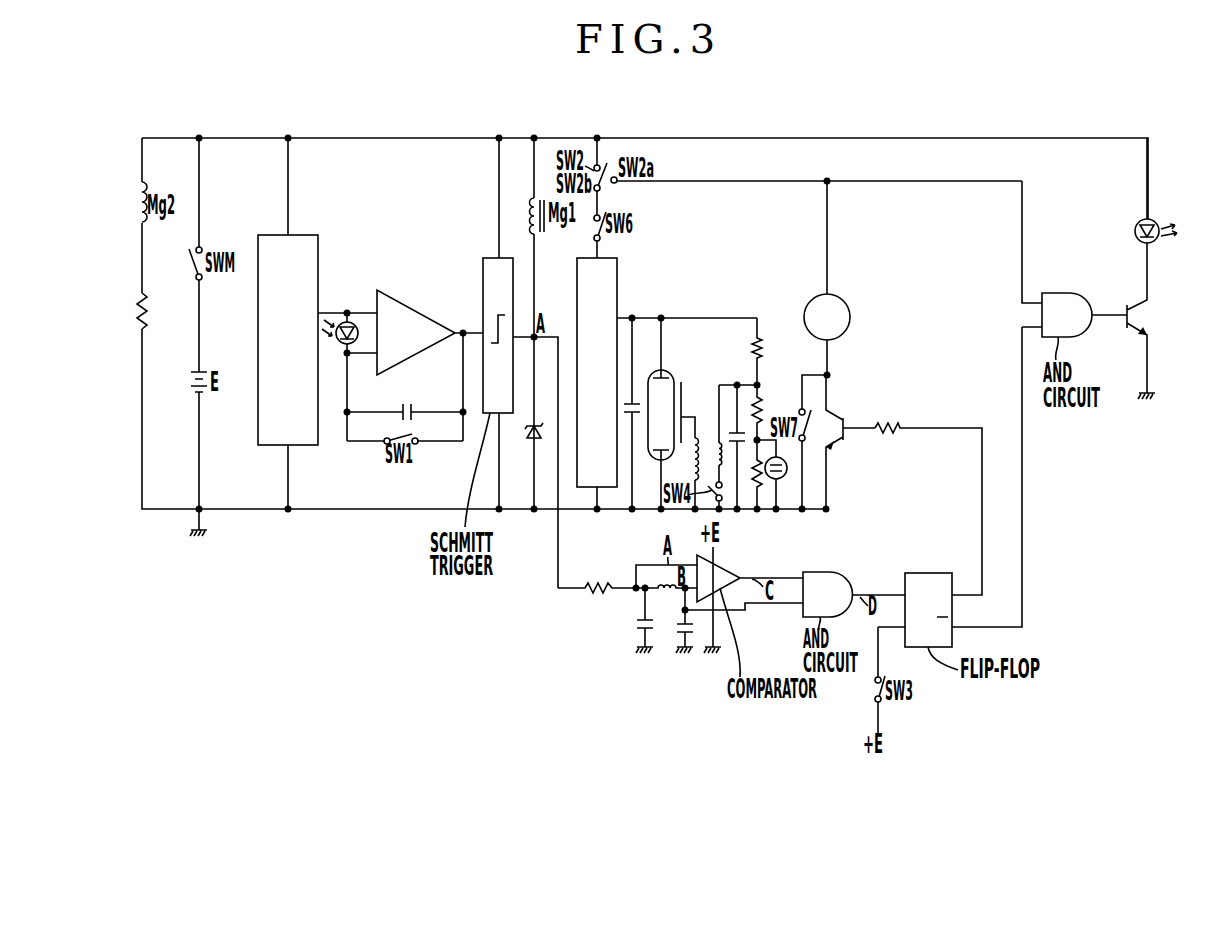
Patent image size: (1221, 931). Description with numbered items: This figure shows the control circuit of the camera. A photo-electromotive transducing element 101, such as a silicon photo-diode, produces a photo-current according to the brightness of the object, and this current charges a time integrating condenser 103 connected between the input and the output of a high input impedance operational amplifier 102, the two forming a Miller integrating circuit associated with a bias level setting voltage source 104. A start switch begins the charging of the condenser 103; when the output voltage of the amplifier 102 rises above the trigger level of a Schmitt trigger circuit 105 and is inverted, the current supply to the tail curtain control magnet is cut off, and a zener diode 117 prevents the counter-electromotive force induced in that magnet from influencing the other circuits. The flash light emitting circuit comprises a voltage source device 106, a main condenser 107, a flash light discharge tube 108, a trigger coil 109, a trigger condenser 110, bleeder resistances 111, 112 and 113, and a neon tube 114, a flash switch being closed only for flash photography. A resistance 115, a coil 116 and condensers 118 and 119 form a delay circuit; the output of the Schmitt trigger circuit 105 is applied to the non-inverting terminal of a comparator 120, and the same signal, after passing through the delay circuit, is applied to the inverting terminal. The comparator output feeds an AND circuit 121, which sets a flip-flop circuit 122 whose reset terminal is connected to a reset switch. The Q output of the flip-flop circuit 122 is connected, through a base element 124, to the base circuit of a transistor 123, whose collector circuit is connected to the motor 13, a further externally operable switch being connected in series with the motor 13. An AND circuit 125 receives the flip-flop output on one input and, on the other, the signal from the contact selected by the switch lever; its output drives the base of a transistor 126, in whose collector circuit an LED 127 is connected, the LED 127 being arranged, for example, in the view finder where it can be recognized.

The motor 13 is at (850, 316).
The photo-electromotive transducing element 101 is at (346, 321).
The high input impedance operational amplifier 102 is at (406, 307).
The time integrating condenser 103 is at (405, 387).
The bias level setting voltage source 104 is at (303, 235).
The Schmitt trigger circuit 105 is at (488, 258).
The voltage source device 106 is at (617, 291).
The main condenser 107 is at (632, 398).
The flash light discharge tube 108 is at (668, 372).
The trigger coil 109 is at (706, 442).
The trigger condenser 110 is at (729, 423).
The bleeder resistance 111 is at (770, 353).
The bleeder resistance 112 is at (760, 411).
The bleeder resistance 113 is at (758, 487).
The neon tube 114 is at (781, 481).
The resistance 115 is at (599, 570).
The coil 116 is at (684, 590).
The zener diode 117 is at (527, 438).
The condenser 118 is at (631, 620).
The condenser 119 is at (680, 634).
The comparator 120 is at (724, 569).
The AND circuit 121 is at (795, 594).
The flip-flop circuit 122 is at (930, 573).
The transistor 123 is at (839, 419).
The resistor 124 is at (883, 436).
The AND circuit 125 is at (1074, 259).
The transistor 126 is at (1137, 313).
The LED 127 is at (1142, 192).